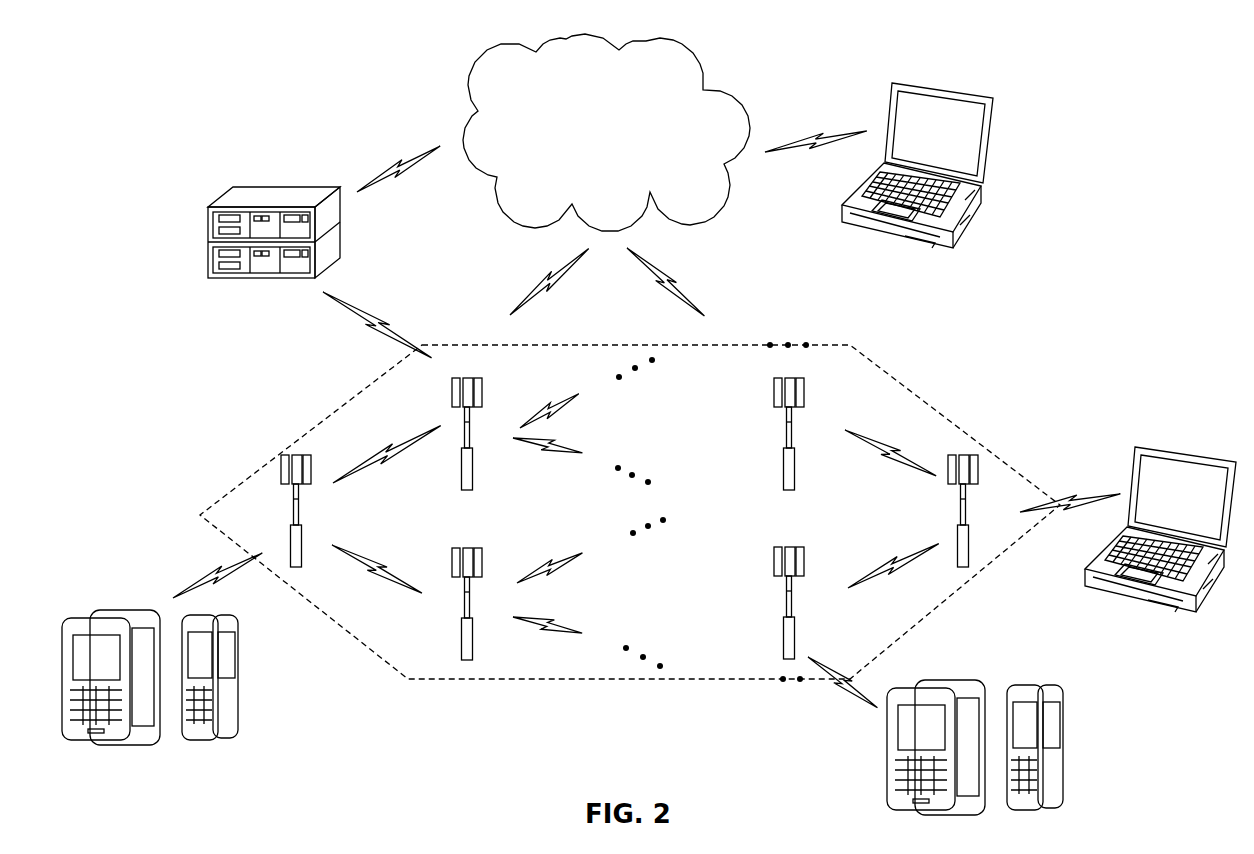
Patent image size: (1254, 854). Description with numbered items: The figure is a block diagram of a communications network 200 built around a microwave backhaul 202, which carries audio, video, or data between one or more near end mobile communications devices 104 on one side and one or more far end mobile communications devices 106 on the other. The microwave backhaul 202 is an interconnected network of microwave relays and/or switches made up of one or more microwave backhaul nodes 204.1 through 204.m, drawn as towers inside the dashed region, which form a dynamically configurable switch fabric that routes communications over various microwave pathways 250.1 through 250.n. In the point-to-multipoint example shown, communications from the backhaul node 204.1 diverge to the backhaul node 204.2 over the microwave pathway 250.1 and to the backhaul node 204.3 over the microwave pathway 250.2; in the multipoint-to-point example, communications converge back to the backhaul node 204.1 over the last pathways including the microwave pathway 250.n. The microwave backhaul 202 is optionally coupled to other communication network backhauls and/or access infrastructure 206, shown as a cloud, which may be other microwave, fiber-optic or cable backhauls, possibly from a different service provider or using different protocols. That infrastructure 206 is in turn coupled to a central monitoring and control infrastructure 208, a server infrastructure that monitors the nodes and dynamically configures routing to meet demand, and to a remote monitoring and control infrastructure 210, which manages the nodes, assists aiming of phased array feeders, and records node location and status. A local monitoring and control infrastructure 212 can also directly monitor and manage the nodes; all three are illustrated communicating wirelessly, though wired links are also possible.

The communications network 200 is at (175, 64).
The microwave backhaul 202 is at (588, 345).
The microwave backhaul node 204.1 is at (278, 470).
The microwave backhaul node 204.2 is at (468, 372).
The microwave backhaul node 204.3 is at (468, 662).
The microwave backhaul node 204.m is at (960, 450).
The other communication network backhauls and/or access infrastructure 206 is at (606, 36).
The central monitoring and control infrastructure 208 is at (275, 170).
The remote monitoring and control infrastructure 210 is at (928, 68).
The local monitoring and control infrastructure 212 is at (1190, 440).
The near end mobile communications devices 104 is at (128, 597).
The far end mobile communications devices 106 is at (995, 668).
The microwave pathway 250.1 is at (362, 450).
The microwave pathway 250.2 is at (378, 548).
The microwave pathway 250.n is at (908, 572).